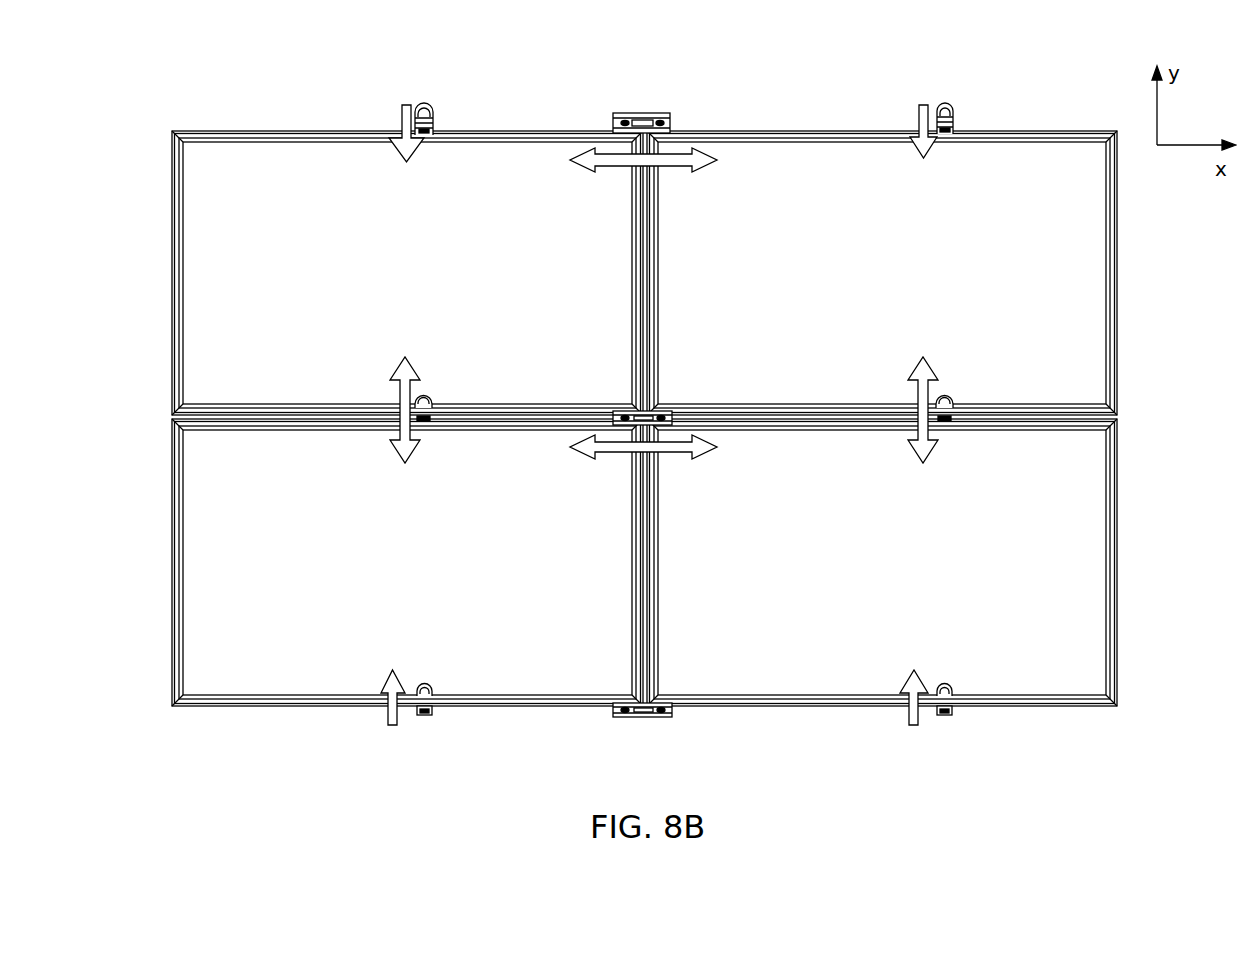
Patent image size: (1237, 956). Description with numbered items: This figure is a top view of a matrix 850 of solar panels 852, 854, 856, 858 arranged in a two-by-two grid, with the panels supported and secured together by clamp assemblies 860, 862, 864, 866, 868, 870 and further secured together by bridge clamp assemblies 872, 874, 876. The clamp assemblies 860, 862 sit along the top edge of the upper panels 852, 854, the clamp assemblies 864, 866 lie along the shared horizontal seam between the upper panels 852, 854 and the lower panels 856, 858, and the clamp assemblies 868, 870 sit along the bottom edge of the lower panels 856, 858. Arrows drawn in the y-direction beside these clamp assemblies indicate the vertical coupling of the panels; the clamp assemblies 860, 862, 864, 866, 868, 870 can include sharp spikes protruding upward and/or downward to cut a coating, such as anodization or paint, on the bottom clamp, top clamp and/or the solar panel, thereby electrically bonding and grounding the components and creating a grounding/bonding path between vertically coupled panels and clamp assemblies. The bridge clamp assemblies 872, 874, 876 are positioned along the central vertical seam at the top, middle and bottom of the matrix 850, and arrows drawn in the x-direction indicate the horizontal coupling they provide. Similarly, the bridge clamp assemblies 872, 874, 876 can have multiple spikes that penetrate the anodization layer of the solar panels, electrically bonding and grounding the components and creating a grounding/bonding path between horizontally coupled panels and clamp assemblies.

The matrix 850 is at (295, 87).
The solar panel 852 is at (428, 284).
The solar panel 854 is at (900, 284).
The solar panel 856 is at (428, 569).
The solar panel 858 is at (900, 569).
The clamp assembly 860 is at (425, 102).
The clamp assembly 862 is at (948, 101).
The clamp assembly 864 is at (427, 395).
The clamp assembly 866 is at (948, 395).
The clamp assembly 868 is at (425, 716).
The clamp assembly 870 is at (945, 716).
The bridge clamp assembly 872 is at (640, 112).
The bridge clamp assembly 874 is at (662, 411).
The bridge clamp assembly 876 is at (640, 718).